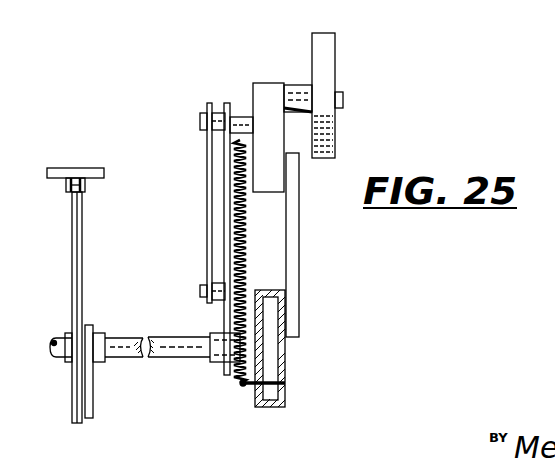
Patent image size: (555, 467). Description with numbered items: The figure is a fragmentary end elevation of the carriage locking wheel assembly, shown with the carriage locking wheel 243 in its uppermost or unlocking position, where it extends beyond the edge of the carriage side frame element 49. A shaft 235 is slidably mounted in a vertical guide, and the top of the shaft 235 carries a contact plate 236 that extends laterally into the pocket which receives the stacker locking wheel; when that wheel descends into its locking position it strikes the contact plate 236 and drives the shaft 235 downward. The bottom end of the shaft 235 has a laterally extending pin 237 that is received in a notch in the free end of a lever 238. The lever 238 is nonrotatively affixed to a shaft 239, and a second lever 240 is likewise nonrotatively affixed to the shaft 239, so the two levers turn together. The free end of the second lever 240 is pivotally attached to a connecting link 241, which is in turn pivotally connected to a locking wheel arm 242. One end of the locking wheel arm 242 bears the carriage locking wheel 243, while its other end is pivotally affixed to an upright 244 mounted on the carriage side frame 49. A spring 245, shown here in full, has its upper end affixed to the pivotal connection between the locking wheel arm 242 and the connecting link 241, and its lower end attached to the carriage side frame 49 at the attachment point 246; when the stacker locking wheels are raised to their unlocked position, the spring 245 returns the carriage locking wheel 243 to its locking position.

The carriage side frame element 49 is at (287, 360).
The shaft 235 is at (83, 218).
The contact plate 236 is at (67, 168).
The pin 237 is at (93, 405).
The lever 238 is at (94, 383).
The shaft 239 is at (172, 337).
The second lever 240 is at (220, 368).
The connecting link 241 is at (207, 157).
The locking wheel arm 242 is at (268, 84).
The carriage locking wheel 243 is at (328, 50).
The upright 244 is at (299, 268).
The spring 245 is at (230, 236).
The spring attachment point 246 is at (243, 387).